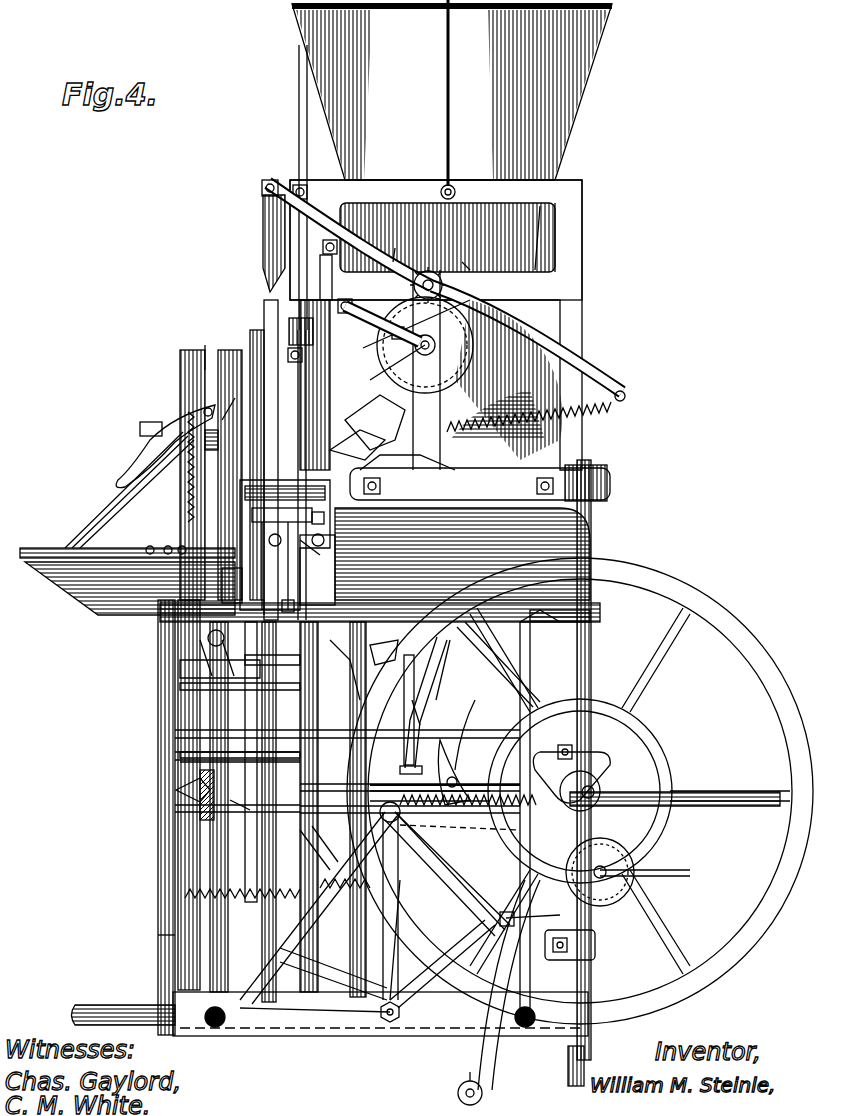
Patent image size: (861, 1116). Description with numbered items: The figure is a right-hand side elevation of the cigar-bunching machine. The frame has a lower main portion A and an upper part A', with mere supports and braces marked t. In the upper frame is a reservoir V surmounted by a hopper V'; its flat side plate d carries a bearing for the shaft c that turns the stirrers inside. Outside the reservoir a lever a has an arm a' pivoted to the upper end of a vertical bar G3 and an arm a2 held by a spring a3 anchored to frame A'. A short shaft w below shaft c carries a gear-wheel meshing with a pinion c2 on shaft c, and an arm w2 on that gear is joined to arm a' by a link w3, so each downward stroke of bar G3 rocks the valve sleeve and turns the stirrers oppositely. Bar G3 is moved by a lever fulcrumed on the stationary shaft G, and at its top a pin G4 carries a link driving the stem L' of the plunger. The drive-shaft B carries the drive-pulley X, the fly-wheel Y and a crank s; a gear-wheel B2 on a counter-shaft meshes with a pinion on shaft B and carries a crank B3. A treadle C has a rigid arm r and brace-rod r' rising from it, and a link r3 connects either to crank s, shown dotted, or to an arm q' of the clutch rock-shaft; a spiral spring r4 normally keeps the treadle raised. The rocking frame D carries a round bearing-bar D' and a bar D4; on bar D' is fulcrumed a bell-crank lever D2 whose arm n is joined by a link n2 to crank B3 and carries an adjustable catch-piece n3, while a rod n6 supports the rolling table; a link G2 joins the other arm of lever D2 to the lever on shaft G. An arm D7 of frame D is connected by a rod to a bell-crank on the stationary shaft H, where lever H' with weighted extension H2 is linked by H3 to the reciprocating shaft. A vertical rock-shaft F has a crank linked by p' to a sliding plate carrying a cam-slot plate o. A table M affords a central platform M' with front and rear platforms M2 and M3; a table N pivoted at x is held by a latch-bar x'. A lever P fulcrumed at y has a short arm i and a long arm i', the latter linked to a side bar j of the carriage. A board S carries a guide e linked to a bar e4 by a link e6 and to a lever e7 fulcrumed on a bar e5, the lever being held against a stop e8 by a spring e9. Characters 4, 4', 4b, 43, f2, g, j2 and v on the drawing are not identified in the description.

The hopper V' is at (452, 92).
The stem of plunger L' is at (282, 187).
The upper part of frame A' is at (462, 325).
The reservoir V is at (447, 237).
The side plate d is at (537, 248).
The pinion c2 is at (426, 283).
The arm of lever a a2 is at (508, 312).
The arm of lever a a' is at (398, 245).
The lever a is at (464, 255).
The laterally-projecting pin G4 is at (270, 182).
The vertically movable bar G3 is at (264, 243).
The link w3 is at (322, 274).
The shaft c is at (430, 268).
The short shaft w is at (392, 362).
The arm w2 is at (360, 336).
The spring a3 is at (596, 412).
The rear platform M3 is at (462, 554).
The stationary horizontal shaft H is at (380, 597).
The post 4 is at (606, 760).
The lever P is at (252, 380).
The guide-bar e is at (197, 346).
The vertical board S is at (241, 465).
The long arm of lever P i' is at (267, 468).
The lever e7 is at (178, 420).
The stop e8 is at (140, 432).
The adjustable bar e5 is at (233, 402).
The spring e9 is at (184, 494).
The latch-bar x' is at (129, 490).
The table N is at (47, 548).
The pivot x is at (156, 534).
The front platform M2 is at (130, 588).
The fulcrum point y is at (224, 585).
The table M is at (285, 545).
The central platform M' is at (317, 570).
The side bar of carriage j is at (330, 516).
The pin j2 is at (300, 545).
The nut v is at (326, 518).
The frame support or brace t is at (288, 607).
The short arm of lever P i is at (260, 605).
The treadle C is at (80, 1006).
The rocking frame D is at (372, 826).
The bell-crank lever D2 is at (401, 901).
The round bearing-bar D' is at (333, 961).
The arm of rocking frame D7 is at (328, 968).
The arm r is at (386, 940).
The link r3 is at (468, 880).
The link p' is at (442, 964).
The arm q' is at (489, 992).
The pivot g is at (466, 1093).
The bolt 4' is at (373, 1032).
The lower main portion of frame A is at (547, 1064).
The spiral spring r4 is at (468, 805).
The arm of bell-crank lever D2 n is at (454, 772).
The catch-piece n3 is at (455, 742).
The rod n6 is at (436, 670).
The link n2 is at (460, 845).
The rod f2 is at (406, 662).
The bar D4 is at (406, 704).
The vertical rock-shaft F is at (445, 775).
The lever H' is at (213, 694).
The link H3 is at (182, 668).
The fork 43 is at (200, 658).
The stationary horizontal shaft G is at (190, 752).
The link G2 is at (188, 762).
The link e6 is at (182, 790).
The weighted extension H2 is at (206, 812).
The adjustable bar e4 is at (236, 814).
The brace-rod r' is at (319, 848).
The fly-wheel Y is at (756, 660).
The drive-pulley X is at (655, 770).
The drive-shaft B is at (600, 782).
The gear-wheel B2 is at (612, 860).
The crank B3 is at (632, 862).
The cam-slot plate o is at (645, 882).
The crank s is at (571, 777).
The post 4b is at (162, 934).